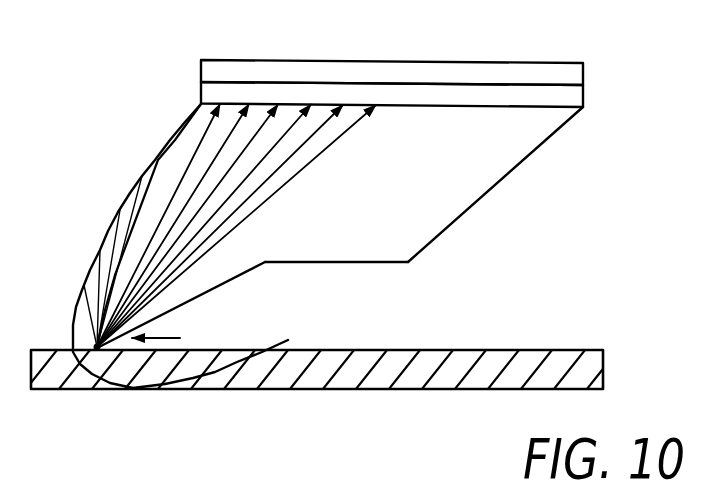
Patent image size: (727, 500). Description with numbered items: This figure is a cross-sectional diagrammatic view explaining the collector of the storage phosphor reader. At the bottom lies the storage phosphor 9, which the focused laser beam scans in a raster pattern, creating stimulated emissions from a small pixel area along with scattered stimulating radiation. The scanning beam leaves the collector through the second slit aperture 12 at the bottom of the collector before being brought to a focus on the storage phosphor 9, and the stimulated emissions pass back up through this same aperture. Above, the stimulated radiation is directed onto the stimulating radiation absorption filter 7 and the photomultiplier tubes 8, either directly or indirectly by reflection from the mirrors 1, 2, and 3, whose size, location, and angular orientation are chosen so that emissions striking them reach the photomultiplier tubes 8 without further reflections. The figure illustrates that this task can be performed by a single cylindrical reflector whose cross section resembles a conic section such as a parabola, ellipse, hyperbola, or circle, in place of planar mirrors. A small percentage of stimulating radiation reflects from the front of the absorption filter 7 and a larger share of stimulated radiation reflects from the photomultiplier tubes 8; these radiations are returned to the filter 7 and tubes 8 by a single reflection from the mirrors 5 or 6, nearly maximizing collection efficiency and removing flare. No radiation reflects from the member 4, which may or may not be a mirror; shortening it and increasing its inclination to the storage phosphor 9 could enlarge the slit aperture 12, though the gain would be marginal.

The mirror 1 is at (71, 333).
The mirror 2 is at (75, 294).
The mirror 3 is at (143, 176).
The member 4 is at (238, 279).
The mirror 5 is at (350, 263).
The mirror 6 is at (497, 184).
The stimulating radiation absorption filter 7 is at (440, 96).
The photomultiplier tubes 8 is at (414, 74).
The storage phosphor 9 is at (466, 365).
The second slit aperture 12 is at (172, 336).